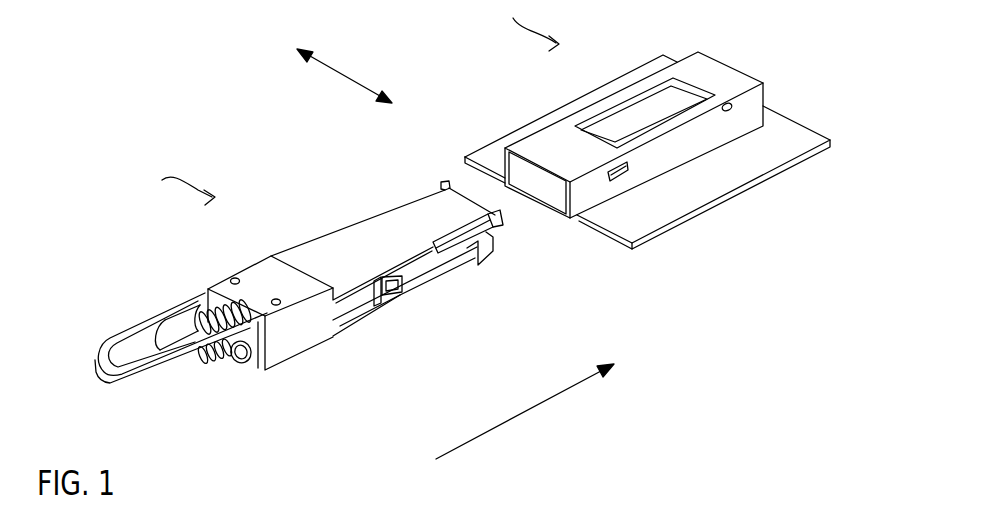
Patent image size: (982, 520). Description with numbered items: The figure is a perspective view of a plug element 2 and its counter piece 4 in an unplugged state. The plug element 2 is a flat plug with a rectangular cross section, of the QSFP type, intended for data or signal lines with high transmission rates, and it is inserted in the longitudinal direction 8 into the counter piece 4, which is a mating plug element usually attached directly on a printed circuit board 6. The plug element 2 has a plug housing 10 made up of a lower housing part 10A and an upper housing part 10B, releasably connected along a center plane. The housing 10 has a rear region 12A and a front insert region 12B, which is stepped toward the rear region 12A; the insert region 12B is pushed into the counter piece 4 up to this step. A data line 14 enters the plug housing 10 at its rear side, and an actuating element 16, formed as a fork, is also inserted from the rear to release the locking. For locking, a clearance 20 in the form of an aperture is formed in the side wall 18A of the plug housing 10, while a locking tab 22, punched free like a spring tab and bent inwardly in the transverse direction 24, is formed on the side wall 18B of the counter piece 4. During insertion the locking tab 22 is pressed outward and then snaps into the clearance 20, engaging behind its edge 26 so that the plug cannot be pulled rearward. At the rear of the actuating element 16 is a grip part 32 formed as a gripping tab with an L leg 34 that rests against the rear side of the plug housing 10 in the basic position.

The plug element 2 is at (168, 181).
The counter piece 4 is at (523, 28).
The printed circuit board 6 is at (690, 202).
The longitudinal direction 8 is at (532, 417).
The plug housing 10 is at (284, 360).
The lower housing part 10A is at (317, 338).
The upper housing part 10B is at (316, 302).
The rear region 12A is at (264, 275).
The front insert region 12B is at (397, 231).
The data line 14 is at (195, 373).
The actuating element 16 is at (165, 330).
The side wall of the plug housing 18A is at (392, 300).
The side wall of the counter piece 18B is at (588, 193).
The clearance 20 is at (390, 300).
The locking tab 22 is at (628, 173).
The transverse direction 24 is at (352, 67).
The edge of the clearance 26 is at (428, 272).
The grip part 32 is at (112, 377).
The L leg 34 is at (243, 360).